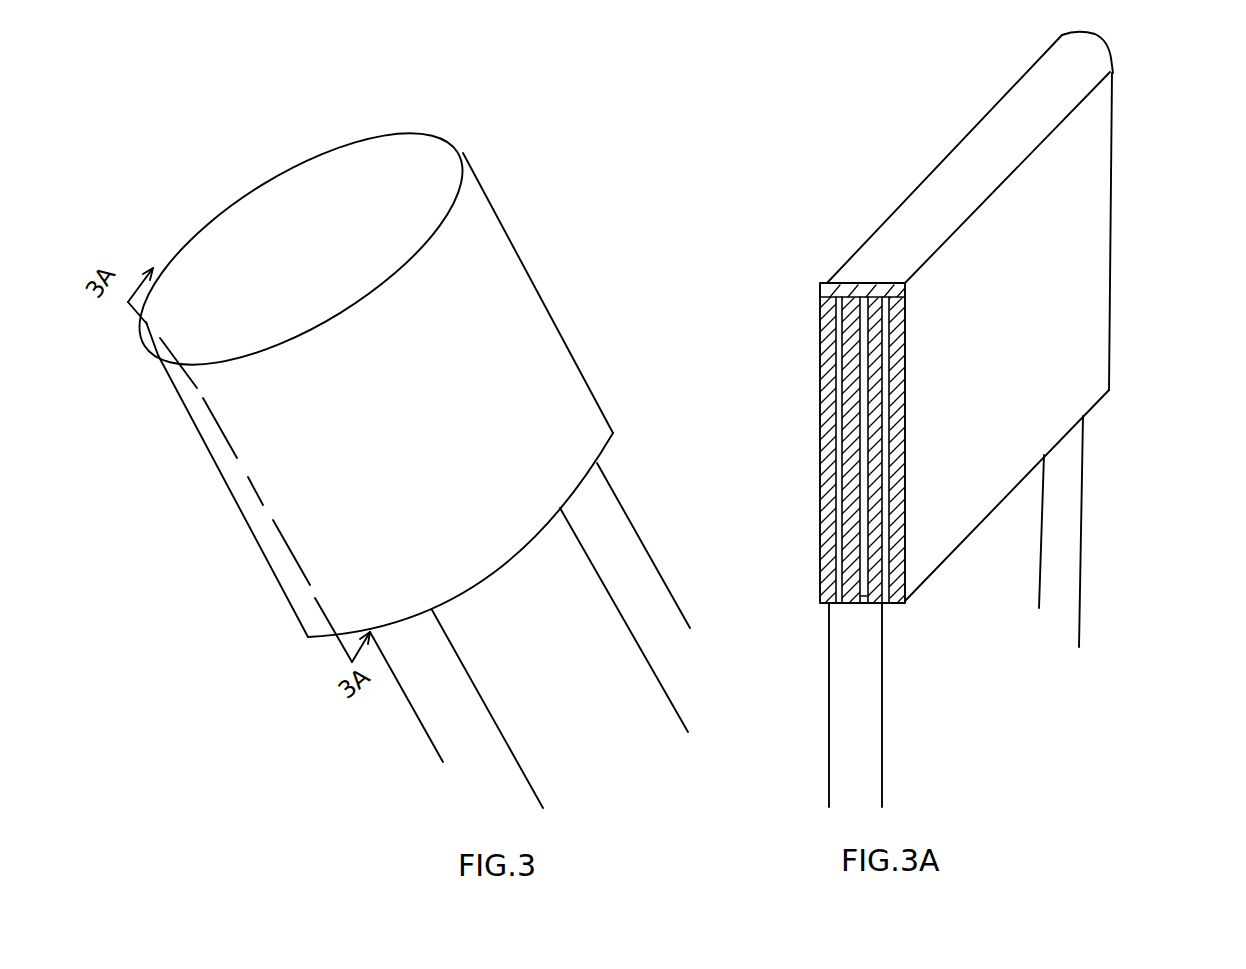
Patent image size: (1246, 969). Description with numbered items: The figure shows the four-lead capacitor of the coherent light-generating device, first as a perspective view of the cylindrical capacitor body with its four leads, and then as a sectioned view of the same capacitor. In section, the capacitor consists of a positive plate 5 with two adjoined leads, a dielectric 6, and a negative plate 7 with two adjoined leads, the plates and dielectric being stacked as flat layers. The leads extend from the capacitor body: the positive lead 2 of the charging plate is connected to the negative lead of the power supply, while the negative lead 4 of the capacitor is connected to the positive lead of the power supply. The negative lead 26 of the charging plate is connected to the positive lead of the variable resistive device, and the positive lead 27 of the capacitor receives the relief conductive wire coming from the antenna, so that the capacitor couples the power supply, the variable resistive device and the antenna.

In FIG. 3, the positive lead 2 is at (523, 782).
In FIG. 3A, the positive lead 2 is at (883, 765).
In FIG. 3, the negative lead 4 is at (423, 727).
In FIG. 3A, the negative lead 4 is at (827, 790).
In FIG. 3A, the positive plate 5 is at (817, 580).
In FIG. 3A, the dielectric 6 is at (850, 297).
In FIG. 3A, the negative plate 7 is at (897, 575).
In FIG. 3, the negative lead 26 is at (673, 705).
In FIG. 3A, the negative lead 26 is at (1083, 577).
In FIG. 3, the positive lead 27 is at (617, 488).
In FIG. 3A, the positive lead 27 is at (1043, 517).